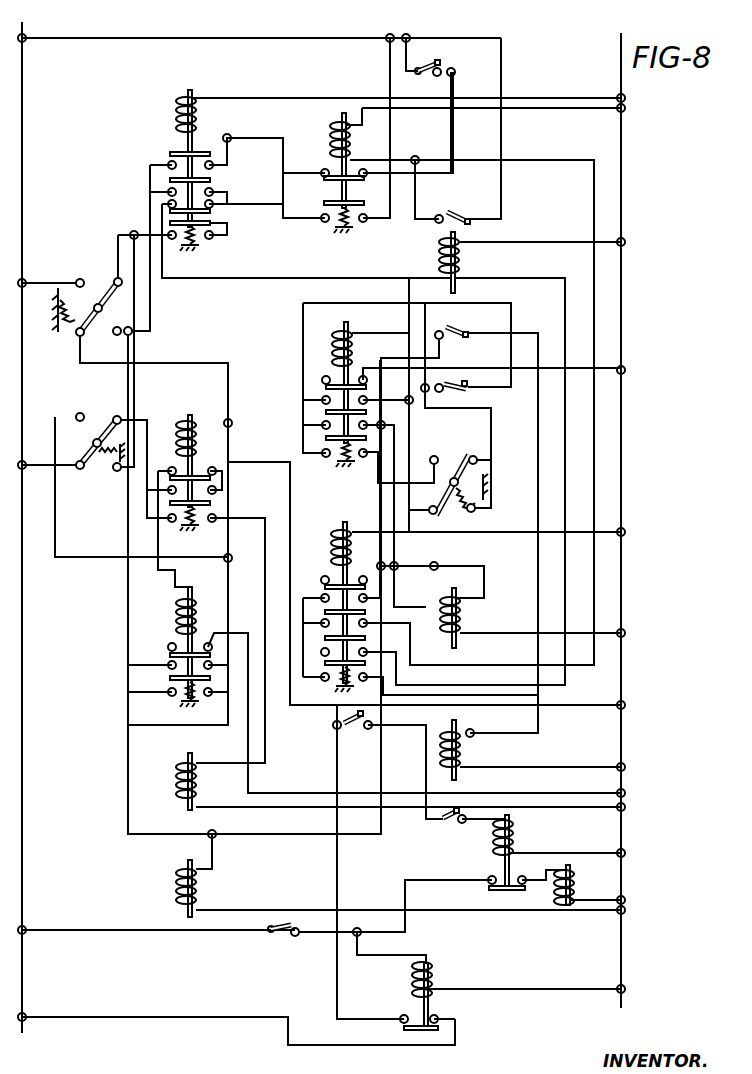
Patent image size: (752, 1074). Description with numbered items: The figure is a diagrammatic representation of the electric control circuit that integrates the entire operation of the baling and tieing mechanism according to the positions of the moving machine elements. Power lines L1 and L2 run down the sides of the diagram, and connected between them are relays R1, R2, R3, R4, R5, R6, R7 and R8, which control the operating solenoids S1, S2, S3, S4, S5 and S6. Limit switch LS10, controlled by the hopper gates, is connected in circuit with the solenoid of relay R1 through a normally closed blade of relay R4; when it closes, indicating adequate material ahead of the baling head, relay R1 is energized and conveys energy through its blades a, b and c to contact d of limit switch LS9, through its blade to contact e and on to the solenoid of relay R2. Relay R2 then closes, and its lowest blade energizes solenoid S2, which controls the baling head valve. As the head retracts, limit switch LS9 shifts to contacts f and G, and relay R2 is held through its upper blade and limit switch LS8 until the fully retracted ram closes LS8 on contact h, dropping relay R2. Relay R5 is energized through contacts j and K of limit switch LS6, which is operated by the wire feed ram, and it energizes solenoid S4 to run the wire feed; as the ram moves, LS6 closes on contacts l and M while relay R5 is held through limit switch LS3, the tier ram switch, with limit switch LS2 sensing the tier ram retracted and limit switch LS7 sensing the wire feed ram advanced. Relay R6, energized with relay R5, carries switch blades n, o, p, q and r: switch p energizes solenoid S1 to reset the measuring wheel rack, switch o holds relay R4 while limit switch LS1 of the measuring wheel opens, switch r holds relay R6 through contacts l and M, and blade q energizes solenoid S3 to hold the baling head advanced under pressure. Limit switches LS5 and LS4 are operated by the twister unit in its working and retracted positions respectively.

The power line L1 is at (27, 30).
The power line L2 is at (623, 40).
The relay R1 is at (201, 118).
The blade of relay R1 a is at (172, 152).
The blade of relay R1 b is at (211, 180).
The blade of relay R1 c is at (211, 223).
The relay R4 is at (333, 128).
The limit switch LS10 is at (436, 62).
The limit switch LS1 is at (465, 196).
The solenoid S1 is at (463, 262).
The limit switch LS9 is at (78, 278).
The contact of limit switch LS9 d is at (112, 276).
The contact of limit switch LS9 f is at (76, 286).
The contact of limit switch LS9 e is at (76, 336).
The contact of limit switch LS9 G is at (120, 343).
The contact of limit switch LS8 h is at (77, 412).
The limit switch LS8 is at (96, 443).
The contact of limit switch LS6 j is at (116, 472).
The relay R2 is at (178, 424).
The switch of relay R6 r is at (211, 503).
The relay R5 is at (336, 340).
The limit switch LS2 is at (452, 322).
The limit switch LS3 is at (458, 392).
The limit switch LS6 is at (452, 468).
The contact of limit switch LS6 J is at (472, 455).
The contact of limit switch LS6 l is at (440, 470).
The contact of limit switch LS6 K is at (436, 514).
The contact of limit switch LS6 M is at (474, 512).
The relay R6 is at (337, 540).
The switch blade of relay R6 n is at (325, 578).
The switch of relay R6 o is at (318, 600).
The switch of relay R6 p is at (318, 626).
The switch blade of relay R6 q is at (320, 652).
The relay R3 is at (178, 616).
The solenoid S4 is at (464, 615).
The solenoid S2 is at (178, 775).
The limit switch LS7 is at (358, 733).
The solenoid S6 is at (464, 750).
The solenoid S3 is at (178, 883).
The limit switch LS5 is at (452, 826).
The relay R7 is at (518, 833).
The solenoid S5 is at (578, 882).
The limit switch LS4 is at (282, 936).
The relay R8 is at (436, 972).